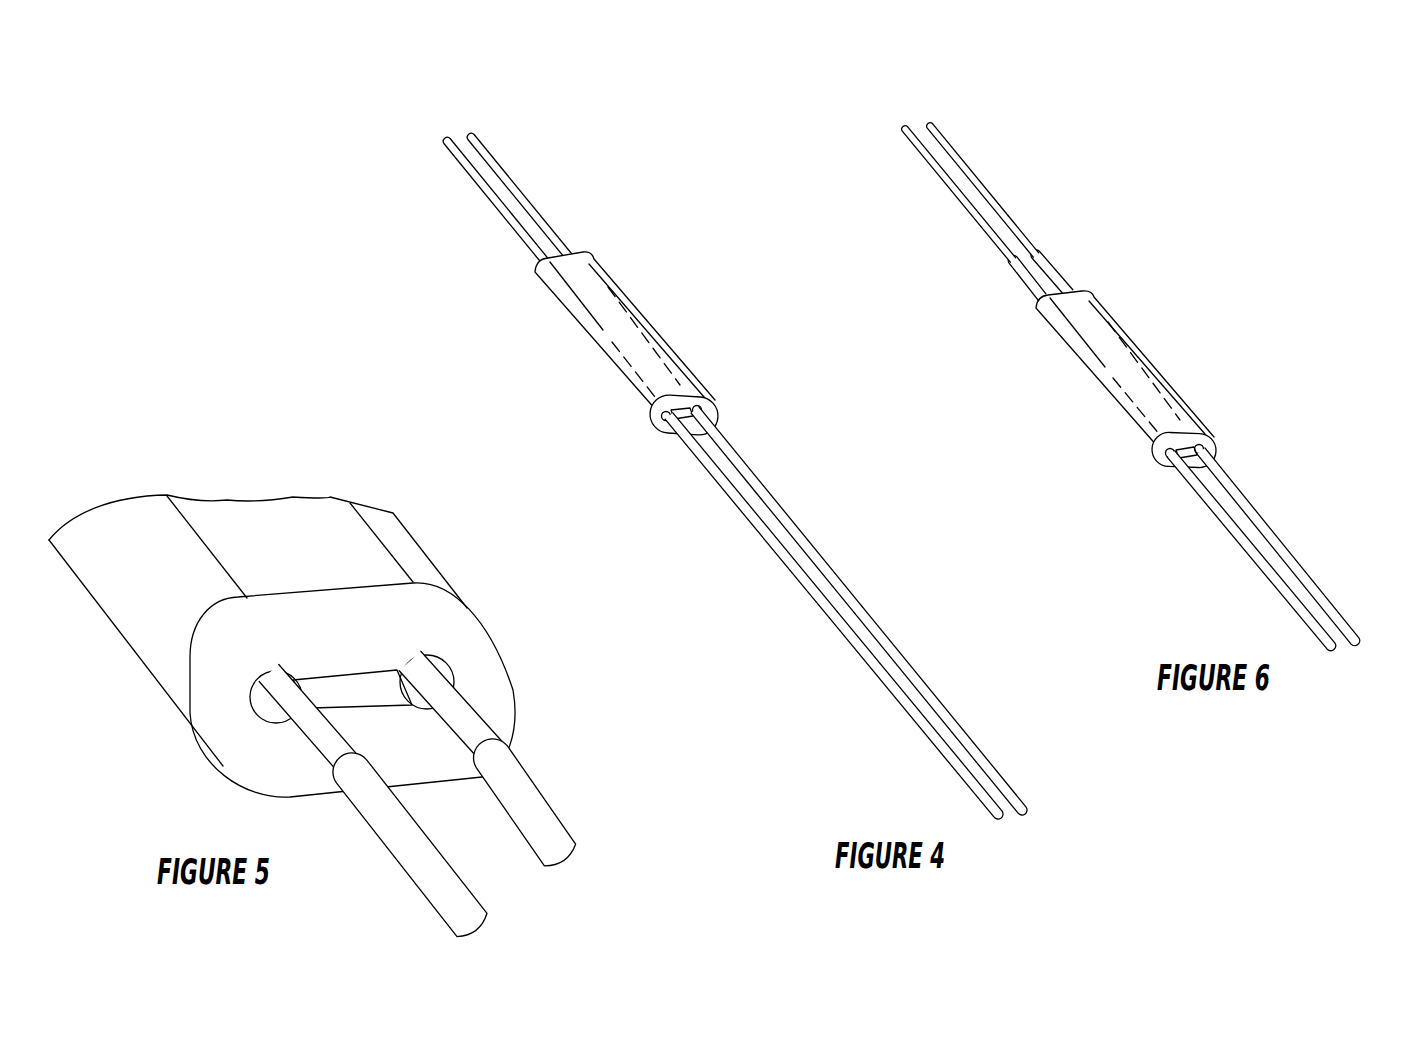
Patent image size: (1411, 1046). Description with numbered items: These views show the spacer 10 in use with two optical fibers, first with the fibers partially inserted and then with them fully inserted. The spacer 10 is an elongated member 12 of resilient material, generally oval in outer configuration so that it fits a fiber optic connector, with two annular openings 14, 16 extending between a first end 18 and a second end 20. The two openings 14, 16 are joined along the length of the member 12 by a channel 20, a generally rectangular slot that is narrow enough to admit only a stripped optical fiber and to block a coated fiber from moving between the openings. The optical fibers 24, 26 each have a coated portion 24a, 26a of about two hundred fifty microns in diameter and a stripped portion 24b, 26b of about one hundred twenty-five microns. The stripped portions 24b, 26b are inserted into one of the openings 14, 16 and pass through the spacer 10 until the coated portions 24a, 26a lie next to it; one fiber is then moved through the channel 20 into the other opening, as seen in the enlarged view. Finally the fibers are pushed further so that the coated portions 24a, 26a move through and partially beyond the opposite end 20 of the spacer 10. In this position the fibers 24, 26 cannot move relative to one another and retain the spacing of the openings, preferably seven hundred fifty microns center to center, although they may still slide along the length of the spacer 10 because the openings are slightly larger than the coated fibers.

In FIG. 5, the spacer 10 is at (323, 716).
In FIG. 4, the spacer 10 is at (735, 476).
In FIG. 6, the spacer 10 is at (1131, 387).
In FIG. 5, the elongated member 12 is at (165, 667).
In FIG. 4, the elongated member 12 is at (600, 347).
In FIG. 6, the elongated member 12 is at (1125, 369).
In FIG. 5, the annular opening 14 is at (262, 705).
In FIG. 4, the annular opening 14 is at (658, 418).
In FIG. 6, the annular opening 14 is at (1170, 453).
In FIG. 5, the annular opening 16 is at (445, 677).
In FIG. 4, the annular opening 16 is at (708, 410).
In FIG. 6, the annular opening 16 is at (1199, 449).
In FIG. 5, the first end 18 is at (503, 700).
In FIG. 4, the first end 18 is at (672, 433).
In FIG. 6, the first end 18 is at (1163, 463).
In FIG. 5, the channel 20 is at (347, 688).
In FIG. 4, the channel 20 is at (690, 392).
In FIG. 6, the channel 20 is at (1186, 452).
In FIG. 4, the optical fiber 24 is at (918, 727).
In FIG. 6, the optical fiber 24 is at (1267, 575).
In FIG. 5, the coated portion 24a is at (392, 850).
In FIG. 4, the coated portion 24a is at (787, 570).
In FIG. 5, the stripped portion 24b is at (313, 747).
In FIG. 4, the stripped portion 24b is at (508, 227).
In FIG. 6, the stripped portion 24b is at (1005, 255).
In FIG. 4, the optical fiber 26 is at (947, 707).
In FIG. 6, the optical fiber 26 is at (1270, 533).
In FIG. 5, the coated portion 26a is at (547, 813).
In FIG. 4, the coated portion 26a is at (817, 552).
In FIG. 5, the stripped portion 26b is at (417, 697).
In FIG. 4, the stripped portion 26b is at (540, 220).
In FIG. 6, the stripped portion 26b is at (1030, 242).